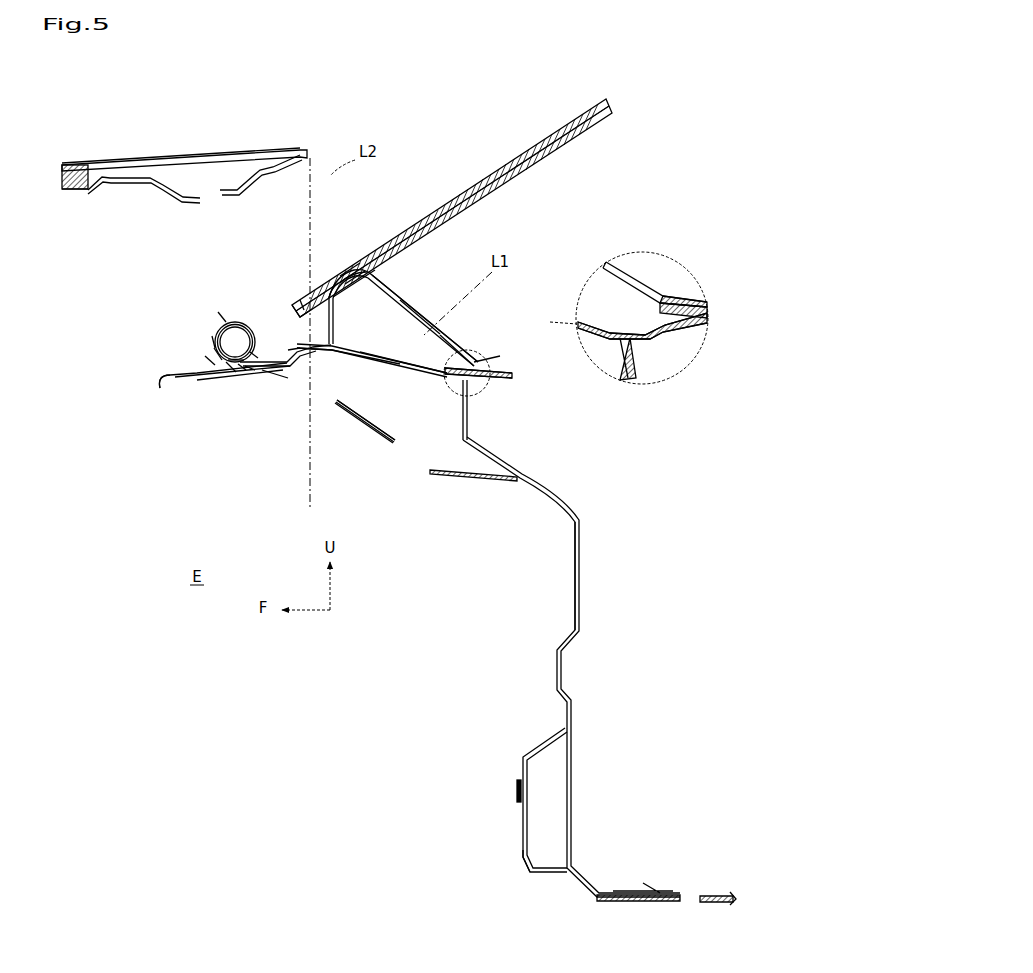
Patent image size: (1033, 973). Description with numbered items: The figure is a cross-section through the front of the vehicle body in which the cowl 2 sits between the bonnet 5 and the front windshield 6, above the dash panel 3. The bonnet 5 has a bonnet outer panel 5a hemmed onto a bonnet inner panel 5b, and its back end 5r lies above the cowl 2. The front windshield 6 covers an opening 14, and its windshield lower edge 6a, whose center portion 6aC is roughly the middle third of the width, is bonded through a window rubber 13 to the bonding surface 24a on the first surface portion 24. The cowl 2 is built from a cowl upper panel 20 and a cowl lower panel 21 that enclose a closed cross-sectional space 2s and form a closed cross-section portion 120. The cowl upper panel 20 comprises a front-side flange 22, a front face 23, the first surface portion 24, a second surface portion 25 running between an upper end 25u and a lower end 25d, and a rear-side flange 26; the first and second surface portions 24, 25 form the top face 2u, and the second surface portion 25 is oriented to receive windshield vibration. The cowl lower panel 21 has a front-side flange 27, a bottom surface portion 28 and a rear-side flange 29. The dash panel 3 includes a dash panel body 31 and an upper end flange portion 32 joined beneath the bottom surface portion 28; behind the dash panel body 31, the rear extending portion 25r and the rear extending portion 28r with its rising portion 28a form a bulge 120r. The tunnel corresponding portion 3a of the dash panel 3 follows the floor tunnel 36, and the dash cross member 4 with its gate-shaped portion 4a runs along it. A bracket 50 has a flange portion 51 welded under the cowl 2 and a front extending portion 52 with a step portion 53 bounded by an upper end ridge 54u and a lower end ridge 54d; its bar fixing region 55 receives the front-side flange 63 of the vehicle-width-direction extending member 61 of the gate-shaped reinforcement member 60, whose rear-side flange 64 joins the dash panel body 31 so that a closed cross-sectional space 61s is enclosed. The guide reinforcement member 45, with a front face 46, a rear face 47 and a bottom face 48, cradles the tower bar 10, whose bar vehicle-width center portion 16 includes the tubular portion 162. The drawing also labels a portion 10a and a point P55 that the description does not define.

The cowl 2 is at (410, 300).
The closed cross-sectional space 2s is at (341, 341).
The top face 2u is at (455, 340).
The dash panel 3 is at (570, 602).
The tunnel corresponding portion 3a is at (590, 897).
The dash cross member 4 is at (516, 763).
The gate-shaped portion 4a is at (523, 863).
The bonnet 5 is at (198, 152).
The bonnet outer panel 5a is at (148, 160).
The bonnet inner panel 5b is at (165, 192).
The back end of the bonnet 5r is at (308, 152).
The front windshield 6 is at (436, 208).
The windshield lower edge 6a is at (300, 303).
The center portion of the windshield lower edge 6aC is at (281, 261).
The tower bar 10 is at (235, 342).
The base of weather strip 10a is at (232, 374).
The window rubber 13 is at (341, 275).
The opening 14 is at (502, 146).
The bar vehicle-width center portion 16 is at (238, 322).
The cowl upper panel 20 is at (445, 338).
The cowl lower panel 21 is at (442, 371).
The front-side flange 22 is at (329, 310).
The front face 23 is at (335, 313).
The first surface portion 24 is at (355, 277).
The bonding surface 24a is at (343, 282).
The second surface portion 25 is at (374, 284).
The upper end of the second surface portion 25u is at (390, 262).
The lower end of the second surface portion 25d is at (492, 352).
The rear extending portion 25r is at (660, 300).
The rear-side flange 26 is at (512, 373).
The front-side flange 27 is at (322, 354).
The bottom surface portion 28 is at (400, 357).
The rising portion 28a is at (480, 390).
The rear extending portion 28r is at (645, 345).
The rear-side flange 29 is at (492, 382).
The dash panel body 31 is at (583, 592).
The upper end flange portion 32 is at (460, 390).
The floor tunnel 36 is at (656, 893).
The guide reinforcement member 45 is at (217, 353).
The front face 46 is at (208, 358).
The rear face 47 is at (253, 350).
The bottom face 48 is at (243, 372).
The bracket 50 is at (169, 374).
The flange portion 51 is at (378, 364).
The front extending portion 52 is at (176, 386).
The step portion 53 is at (302, 358).
The upper end ridge 54u is at (297, 360).
The lower end ridge 54d is at (288, 373).
The bar fixing region 55 is at (236, 376).
The gate-shaped reinforcement member 60 is at (365, 422).
The vehicle-width-direction extending member 61 is at (356, 412).
The closed cross-sectional space 61s is at (383, 413).
The front-side flange 63 is at (250, 369).
The rear-side flange 64 is at (512, 484).
The closed cross-section portion 120 is at (420, 318).
The bulge 120r is at (656, 343).
The portion between the two fastening portions 162 is at (212, 338).
The attachment point P55 is at (220, 313).